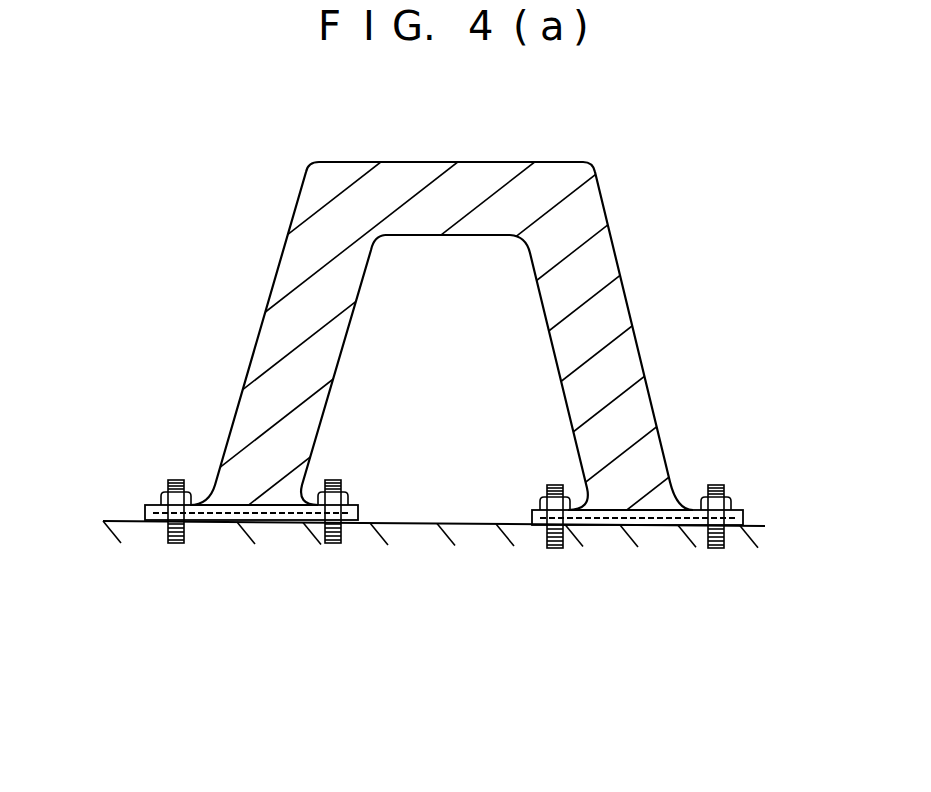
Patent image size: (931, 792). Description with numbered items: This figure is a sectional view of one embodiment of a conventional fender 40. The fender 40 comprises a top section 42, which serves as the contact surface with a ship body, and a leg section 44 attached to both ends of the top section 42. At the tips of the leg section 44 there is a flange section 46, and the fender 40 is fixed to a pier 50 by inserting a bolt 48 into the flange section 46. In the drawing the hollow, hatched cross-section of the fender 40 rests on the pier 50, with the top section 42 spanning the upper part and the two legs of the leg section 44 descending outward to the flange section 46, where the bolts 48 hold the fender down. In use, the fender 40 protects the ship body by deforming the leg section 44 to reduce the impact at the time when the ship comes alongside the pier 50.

The fender 40 is at (449, 280).
The top section 42 is at (492, 162).
The leg section 44 is at (277, 338).
The flange section 46 is at (145, 505).
The bolt 48 is at (175, 480).
The pier 50 is at (455, 522).